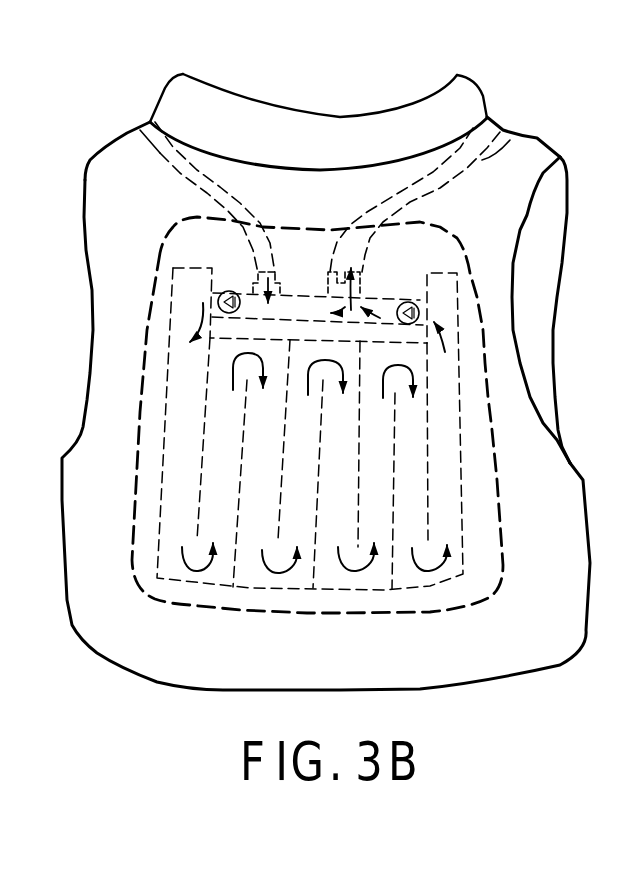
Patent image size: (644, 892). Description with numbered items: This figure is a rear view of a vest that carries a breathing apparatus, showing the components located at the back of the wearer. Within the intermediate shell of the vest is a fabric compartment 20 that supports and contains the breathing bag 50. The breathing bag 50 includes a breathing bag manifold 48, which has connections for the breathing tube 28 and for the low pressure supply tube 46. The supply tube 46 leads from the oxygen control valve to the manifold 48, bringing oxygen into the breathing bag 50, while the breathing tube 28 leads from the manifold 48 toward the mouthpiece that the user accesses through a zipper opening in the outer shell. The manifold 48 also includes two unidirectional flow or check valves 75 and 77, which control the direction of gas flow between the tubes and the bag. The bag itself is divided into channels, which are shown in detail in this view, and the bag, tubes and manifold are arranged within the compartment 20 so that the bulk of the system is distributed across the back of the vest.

The fabric compartment 20 is at (507, 547).
The breathing tube 28 is at (497, 157).
The low pressure supply tube 46 is at (143, 150).
The breathing bag manifold 48 is at (166, 236).
The breathing bag 50 is at (463, 443).
The check valve 75 is at (217, 298).
The check valve 77 is at (420, 308).